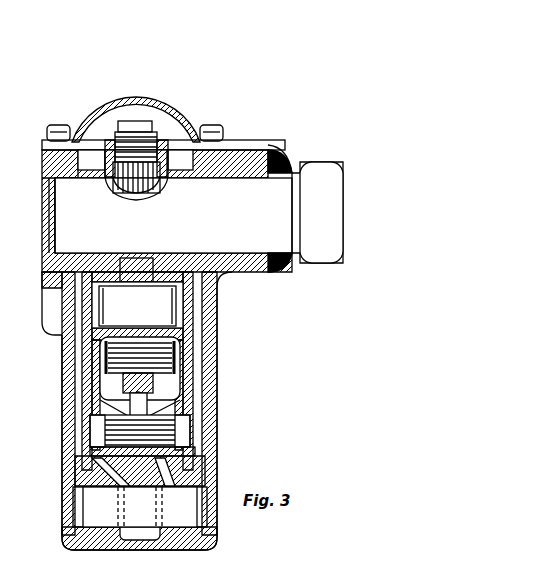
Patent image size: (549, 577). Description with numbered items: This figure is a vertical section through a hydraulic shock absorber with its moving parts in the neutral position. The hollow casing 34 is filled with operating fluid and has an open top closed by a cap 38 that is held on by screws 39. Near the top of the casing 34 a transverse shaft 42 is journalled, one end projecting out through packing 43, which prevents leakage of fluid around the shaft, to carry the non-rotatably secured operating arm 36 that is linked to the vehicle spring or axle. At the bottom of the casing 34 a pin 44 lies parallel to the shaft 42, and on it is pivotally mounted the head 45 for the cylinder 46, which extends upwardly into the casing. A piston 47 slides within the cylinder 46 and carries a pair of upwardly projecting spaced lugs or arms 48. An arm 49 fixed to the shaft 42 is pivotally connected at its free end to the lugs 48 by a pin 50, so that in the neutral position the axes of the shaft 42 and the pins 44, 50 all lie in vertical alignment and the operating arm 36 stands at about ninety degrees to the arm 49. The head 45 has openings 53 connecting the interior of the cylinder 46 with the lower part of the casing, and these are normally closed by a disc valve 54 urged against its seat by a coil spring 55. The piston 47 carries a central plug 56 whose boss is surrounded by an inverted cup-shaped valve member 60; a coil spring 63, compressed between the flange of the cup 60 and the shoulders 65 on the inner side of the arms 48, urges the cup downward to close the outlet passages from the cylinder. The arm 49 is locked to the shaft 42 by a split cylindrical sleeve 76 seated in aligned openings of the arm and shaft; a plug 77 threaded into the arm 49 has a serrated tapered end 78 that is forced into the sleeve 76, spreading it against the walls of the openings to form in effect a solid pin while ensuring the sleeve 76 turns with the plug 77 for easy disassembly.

The casing 34 is at (212, 333).
The operating arm 36 is at (337, 212).
The cap 38 is at (172, 111).
The screws 39 is at (221, 126).
The transverse shaft 42 is at (167, 206).
The packing 43 is at (287, 158).
The pin 44 is at (98, 505).
The head 45 is at (87, 475).
The cylinder 46 is at (128, 403).
The piston 47 is at (178, 367).
The lugs or arms 48 is at (43, 276).
The arm 49 is at (143, 260).
The pin 50 is at (137, 305).
The openings 53 is at (163, 470).
The disc valve 54 is at (190, 447).
The coil spring 55 is at (103, 430).
The central plug 56 is at (160, 418).
The inverted cup-shaped valve member 60 is at (167, 393).
The coil spring 63 is at (113, 362).
The shoulders 65 is at (100, 348).
The split cylindrical sleeve 76 is at (158, 192).
The plug 77 is at (128, 121).
The tapered end 78 is at (113, 192).